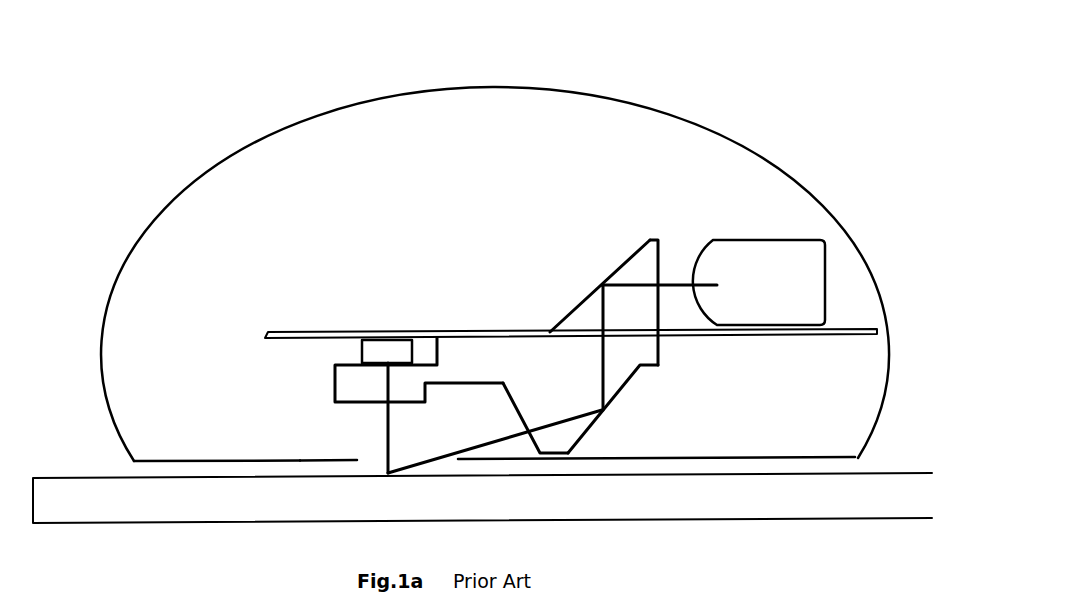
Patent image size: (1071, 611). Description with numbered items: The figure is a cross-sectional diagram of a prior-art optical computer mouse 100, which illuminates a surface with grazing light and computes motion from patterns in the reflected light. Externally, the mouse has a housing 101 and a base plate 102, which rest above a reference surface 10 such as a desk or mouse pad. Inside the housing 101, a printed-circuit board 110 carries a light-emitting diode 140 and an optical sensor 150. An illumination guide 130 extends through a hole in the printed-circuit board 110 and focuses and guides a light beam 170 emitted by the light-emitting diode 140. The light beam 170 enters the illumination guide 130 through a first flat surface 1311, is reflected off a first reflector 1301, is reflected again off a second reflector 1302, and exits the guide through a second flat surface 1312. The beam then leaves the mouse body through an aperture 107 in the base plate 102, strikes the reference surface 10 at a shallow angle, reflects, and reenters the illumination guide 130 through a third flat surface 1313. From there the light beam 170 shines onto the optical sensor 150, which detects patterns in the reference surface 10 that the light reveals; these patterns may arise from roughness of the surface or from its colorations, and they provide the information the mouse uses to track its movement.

The reference surface 10 is at (402, 482).
The prior-art optical computer mouse 100 is at (657, 77).
The housing 101 is at (265, 145).
The base plate 102 is at (148, 468).
The aperture 107 is at (375, 462).
The printed-circuit board 110 is at (316, 323).
The illumination guide 130 is at (495, 420).
The light-emitting diode 140 is at (685, 286).
The optical sensor 150 is at (387, 406).
The light beam 170 is at (682, 297).
The first reflector 1301 is at (603, 279).
The second reflector 1302 is at (608, 418).
The first flat surface 1311 is at (667, 250).
The second flat surface 1312 is at (508, 410).
The third flat surface 1313 is at (368, 416).